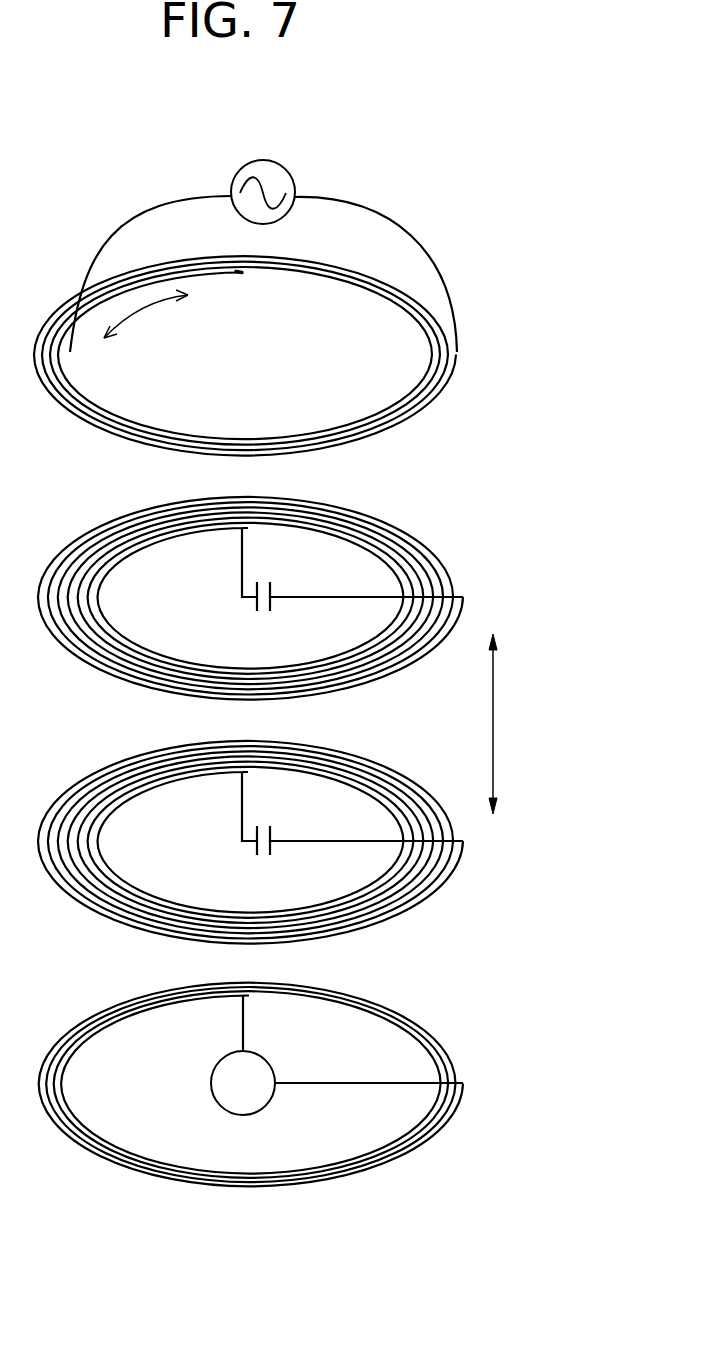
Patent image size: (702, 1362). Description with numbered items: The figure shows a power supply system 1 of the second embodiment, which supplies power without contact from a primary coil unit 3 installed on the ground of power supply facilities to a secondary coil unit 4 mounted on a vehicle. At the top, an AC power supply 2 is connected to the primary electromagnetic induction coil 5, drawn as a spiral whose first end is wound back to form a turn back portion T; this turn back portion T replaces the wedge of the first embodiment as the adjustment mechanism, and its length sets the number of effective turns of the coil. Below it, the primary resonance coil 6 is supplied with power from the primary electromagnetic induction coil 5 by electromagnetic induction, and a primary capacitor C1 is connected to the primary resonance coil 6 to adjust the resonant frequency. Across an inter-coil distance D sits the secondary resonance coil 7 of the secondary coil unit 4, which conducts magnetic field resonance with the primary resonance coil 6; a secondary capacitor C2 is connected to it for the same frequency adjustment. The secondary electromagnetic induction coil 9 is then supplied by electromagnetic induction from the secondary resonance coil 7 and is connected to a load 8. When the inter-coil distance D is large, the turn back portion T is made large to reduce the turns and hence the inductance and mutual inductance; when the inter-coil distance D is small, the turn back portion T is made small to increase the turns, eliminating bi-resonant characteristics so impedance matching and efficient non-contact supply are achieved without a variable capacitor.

The power supply system 1 is at (525, 148).
The AC power supply 2 is at (290, 173).
The primary coil unit 3 is at (565, 225).
The secondary coil unit 4 is at (566, 717).
The primary electromagnetic induction coil 5 is at (266, 326).
The primary resonance coil 6 is at (263, 598).
The secondary resonance coil 7 is at (263, 842).
The load 8 is at (217, 1066).
The secondary electromagnetic induction coil 9 is at (263, 1085).
The primary capacitor C1 is at (273, 590).
The secondary capacitor C2 is at (273, 834).
The inter-coil distance D is at (493, 710).
The turn back portion T is at (242, 282).